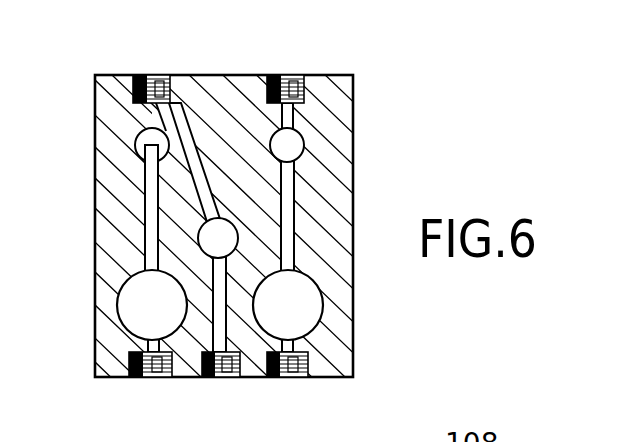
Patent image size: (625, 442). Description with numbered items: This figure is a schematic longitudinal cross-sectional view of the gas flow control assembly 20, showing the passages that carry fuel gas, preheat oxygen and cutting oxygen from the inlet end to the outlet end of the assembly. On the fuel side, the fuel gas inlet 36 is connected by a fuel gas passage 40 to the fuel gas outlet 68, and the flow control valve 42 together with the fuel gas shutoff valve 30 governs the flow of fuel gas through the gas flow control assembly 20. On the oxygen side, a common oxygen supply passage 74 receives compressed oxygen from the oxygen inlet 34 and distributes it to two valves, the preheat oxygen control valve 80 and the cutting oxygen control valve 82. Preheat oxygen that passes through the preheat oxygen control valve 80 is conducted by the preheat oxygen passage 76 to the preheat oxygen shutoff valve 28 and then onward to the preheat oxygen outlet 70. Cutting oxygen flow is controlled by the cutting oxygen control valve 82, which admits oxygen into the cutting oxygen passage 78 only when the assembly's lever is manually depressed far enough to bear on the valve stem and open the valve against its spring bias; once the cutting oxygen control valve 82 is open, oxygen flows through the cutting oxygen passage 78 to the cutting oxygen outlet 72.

The gas flow control assembly 20 is at (372, 76).
The preheat oxygen shutoff valve 28 is at (136, 317).
The fuel gas shutoff valve 30 is at (271, 317).
The oxygen inlet 34 is at (160, 77).
The fuel gas inlet 36 is at (296, 77).
The fuel gas passage 40 is at (288, 197).
The flow control valve 42 is at (298, 143).
The fuel gas outlet 68 is at (303, 378).
The preheat oxygen outlet 70 is at (162, 378).
The cutting oxygen outlet 72 is at (230, 378).
The common oxygen supply passage 74 is at (158, 166).
The preheat oxygen passage 76 is at (200, 243).
The cutting oxygen passage 78 is at (217, 278).
The preheat oxygen control valve 80 is at (143, 143).
The cutting oxygen control valve 82 is at (205, 237).